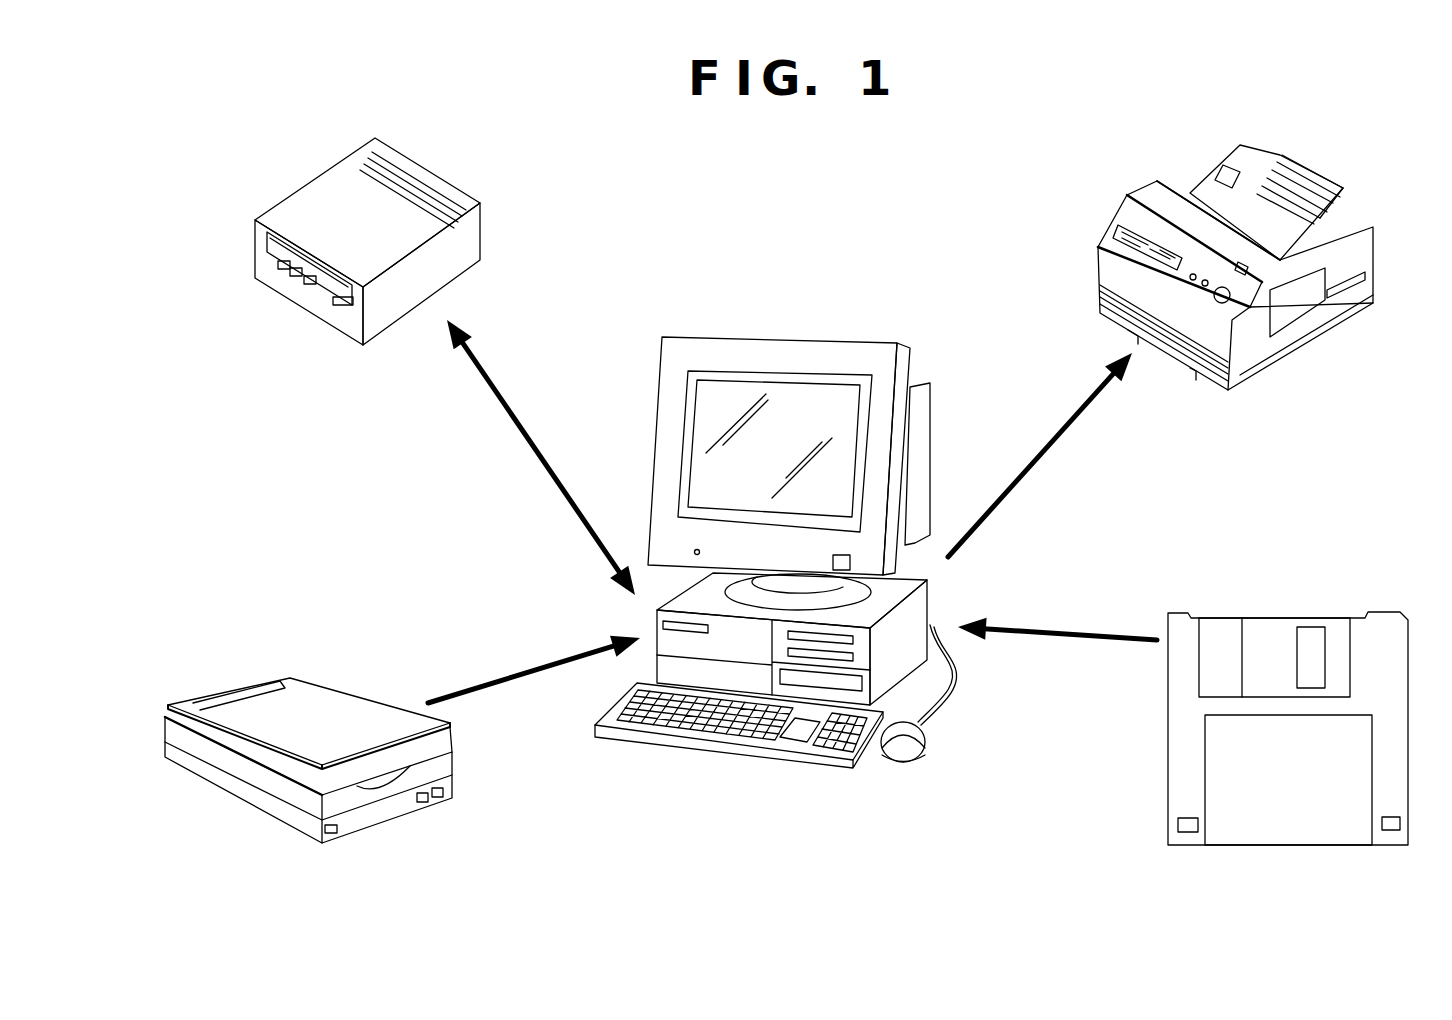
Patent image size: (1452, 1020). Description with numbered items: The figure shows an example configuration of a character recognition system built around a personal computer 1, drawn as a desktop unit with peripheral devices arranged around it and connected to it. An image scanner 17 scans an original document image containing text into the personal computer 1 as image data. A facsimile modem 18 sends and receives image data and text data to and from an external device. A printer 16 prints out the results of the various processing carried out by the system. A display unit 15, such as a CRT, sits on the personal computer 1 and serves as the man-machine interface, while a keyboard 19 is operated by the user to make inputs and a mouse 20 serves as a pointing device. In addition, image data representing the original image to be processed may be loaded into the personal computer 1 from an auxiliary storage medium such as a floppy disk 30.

The personal computer 1 is at (932, 622).
The display unit 15 is at (773, 338).
The printer 16 is at (1255, 152).
The image scanner 17 is at (320, 693).
The facsimile modem 18 is at (425, 168).
The keyboard 19 is at (672, 748).
The mouse 20 is at (927, 743).
The floppy disk 30 is at (1281, 618).